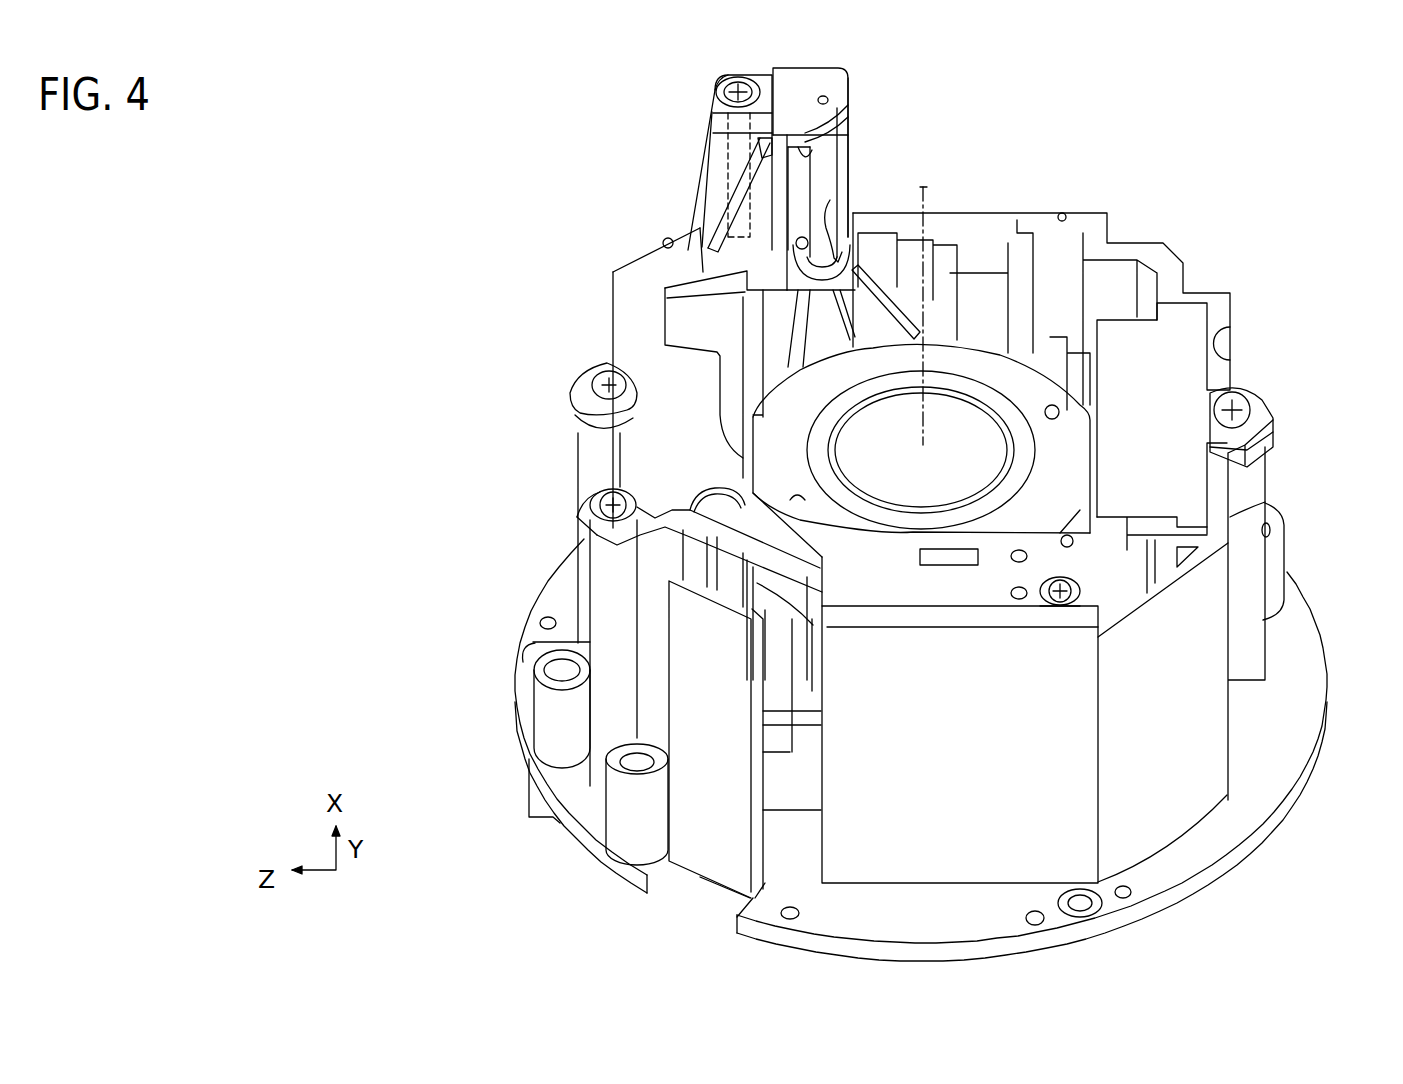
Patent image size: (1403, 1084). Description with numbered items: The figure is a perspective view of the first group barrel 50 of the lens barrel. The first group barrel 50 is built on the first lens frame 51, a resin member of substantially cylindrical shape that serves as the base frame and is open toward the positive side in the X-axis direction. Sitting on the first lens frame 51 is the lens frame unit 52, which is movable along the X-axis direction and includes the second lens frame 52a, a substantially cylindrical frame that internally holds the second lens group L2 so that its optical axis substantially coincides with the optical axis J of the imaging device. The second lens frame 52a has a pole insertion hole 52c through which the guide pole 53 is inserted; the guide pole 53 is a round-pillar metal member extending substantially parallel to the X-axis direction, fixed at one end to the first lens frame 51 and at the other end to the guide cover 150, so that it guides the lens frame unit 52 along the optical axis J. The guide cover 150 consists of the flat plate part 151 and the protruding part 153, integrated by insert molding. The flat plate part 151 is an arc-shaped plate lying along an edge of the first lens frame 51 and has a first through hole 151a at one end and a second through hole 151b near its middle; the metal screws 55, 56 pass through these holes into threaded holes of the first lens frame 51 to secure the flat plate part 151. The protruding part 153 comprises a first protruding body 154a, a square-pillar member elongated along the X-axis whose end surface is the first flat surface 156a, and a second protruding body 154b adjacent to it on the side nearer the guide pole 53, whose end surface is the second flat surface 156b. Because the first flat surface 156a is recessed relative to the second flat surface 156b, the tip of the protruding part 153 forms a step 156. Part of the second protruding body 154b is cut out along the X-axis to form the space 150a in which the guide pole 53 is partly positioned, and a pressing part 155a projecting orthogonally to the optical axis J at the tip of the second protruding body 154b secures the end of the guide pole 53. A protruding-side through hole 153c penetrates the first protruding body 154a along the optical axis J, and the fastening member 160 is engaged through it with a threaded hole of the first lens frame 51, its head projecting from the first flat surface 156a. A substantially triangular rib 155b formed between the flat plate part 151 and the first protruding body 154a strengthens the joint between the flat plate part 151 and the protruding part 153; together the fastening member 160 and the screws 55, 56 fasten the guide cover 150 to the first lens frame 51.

The first group barrel 50 is at (1312, 302).
The first lens frame 51 is at (1324, 670).
The lens frame unit 52 is at (970, 343).
The second lens frame 52a is at (1018, 375).
The pole insertion hole 52c is at (830, 215).
The guide pole 53 is at (828, 168).
The screw 55 is at (1065, 600).
The screw 56 is at (600, 506).
The guide cover 150 is at (613, 303).
The space 150a is at (803, 156).
The flat plate part 151 is at (645, 345).
The first through hole 151a is at (1052, 605).
The second through hole 151b is at (613, 478).
The protruding part 153 is at (783, 78).
The protruding-side through hole 153c is at (735, 157).
The first protruding body 154a is at (723, 187).
The second protruding body 154b is at (753, 218).
The pressing part 155a is at (810, 133).
The rib 155b is at (690, 232).
The step 156 is at (770, 127).
The first flat surface 156a is at (768, 72).
The second flat surface 156b is at (808, 84).
The fastening member 160 is at (716, 92).
The optical axis J is at (927, 185).
The second lens group L2 is at (942, 481).